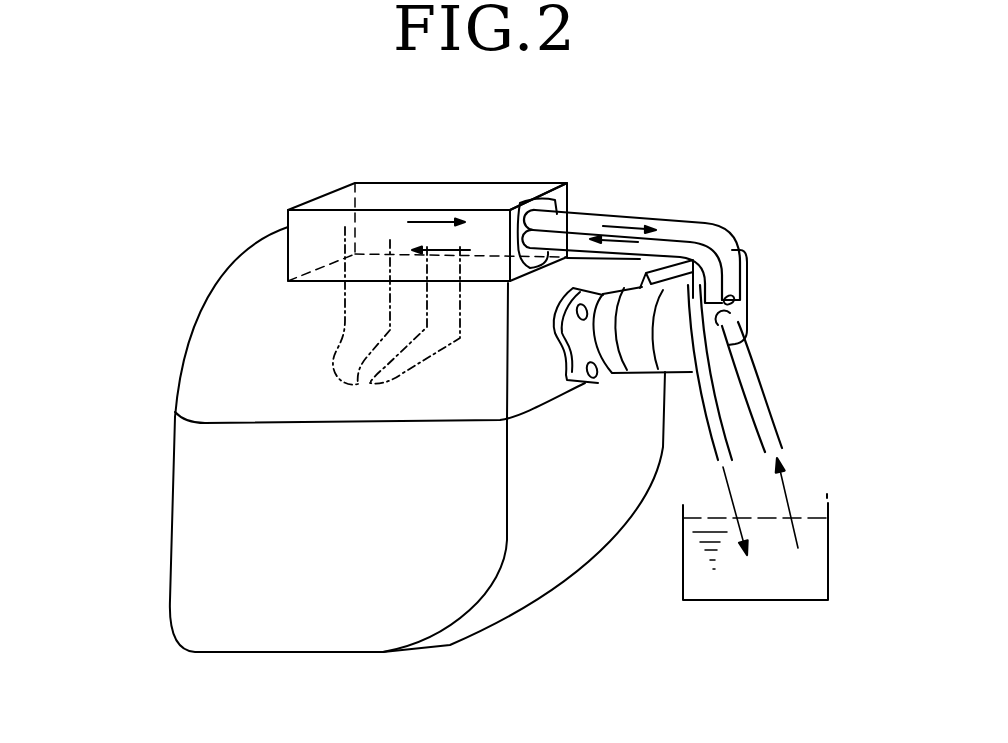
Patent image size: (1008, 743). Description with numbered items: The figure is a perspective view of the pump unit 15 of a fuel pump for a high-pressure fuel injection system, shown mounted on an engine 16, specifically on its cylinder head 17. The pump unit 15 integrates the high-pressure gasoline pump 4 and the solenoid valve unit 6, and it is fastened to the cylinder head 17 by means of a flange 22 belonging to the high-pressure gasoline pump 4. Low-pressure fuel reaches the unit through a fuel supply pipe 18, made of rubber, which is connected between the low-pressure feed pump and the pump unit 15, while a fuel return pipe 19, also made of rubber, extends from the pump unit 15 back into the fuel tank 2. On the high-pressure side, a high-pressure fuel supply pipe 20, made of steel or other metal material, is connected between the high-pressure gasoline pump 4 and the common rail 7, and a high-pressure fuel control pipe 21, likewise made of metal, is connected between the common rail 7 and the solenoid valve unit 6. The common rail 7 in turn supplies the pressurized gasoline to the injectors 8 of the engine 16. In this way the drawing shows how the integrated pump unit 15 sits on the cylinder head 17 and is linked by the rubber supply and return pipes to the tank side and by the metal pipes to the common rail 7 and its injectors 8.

The fuel tank 2 is at (743, 602).
The high-pressure gasoline pump 4 is at (642, 353).
The solenoid valve unit 6 is at (665, 285).
The common rail 7 is at (442, 181).
The injectors 8 is at (396, 323).
The pump unit 15 is at (766, 294).
The engine 16 is at (160, 433).
The cylinder head 17 is at (210, 363).
The fuel supply pipe 18 is at (772, 425).
The fuel return pipe 19 is at (717, 442).
The high-pressure fuel supply pipe 20 is at (663, 253).
The high-pressure fuel control pipe 21 is at (588, 222).
The flange 22 is at (583, 387).